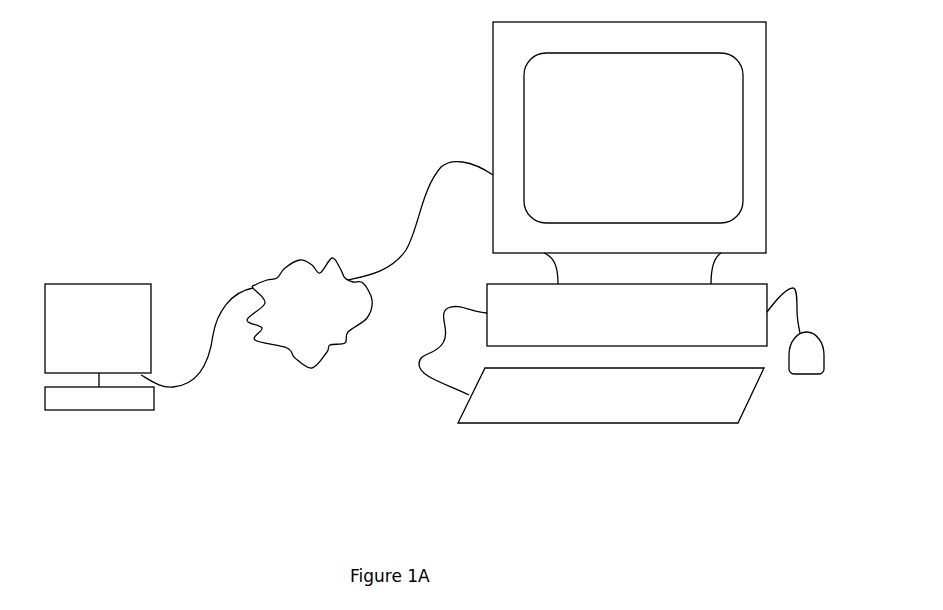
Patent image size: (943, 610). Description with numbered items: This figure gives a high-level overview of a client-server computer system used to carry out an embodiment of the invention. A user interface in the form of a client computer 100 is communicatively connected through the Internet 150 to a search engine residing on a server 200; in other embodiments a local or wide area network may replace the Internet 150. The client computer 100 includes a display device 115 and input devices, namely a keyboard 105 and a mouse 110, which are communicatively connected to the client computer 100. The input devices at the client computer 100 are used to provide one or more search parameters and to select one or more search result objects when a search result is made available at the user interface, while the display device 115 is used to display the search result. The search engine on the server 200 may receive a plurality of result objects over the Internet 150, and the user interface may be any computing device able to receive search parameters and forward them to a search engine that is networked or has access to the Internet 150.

The client computer 100 is at (606, 246).
The keyboard 105 is at (683, 407).
The mouse 110 is at (824, 353).
The display device 115 is at (743, 175).
The Internet 150 is at (332, 345).
The server 200 is at (98, 284).